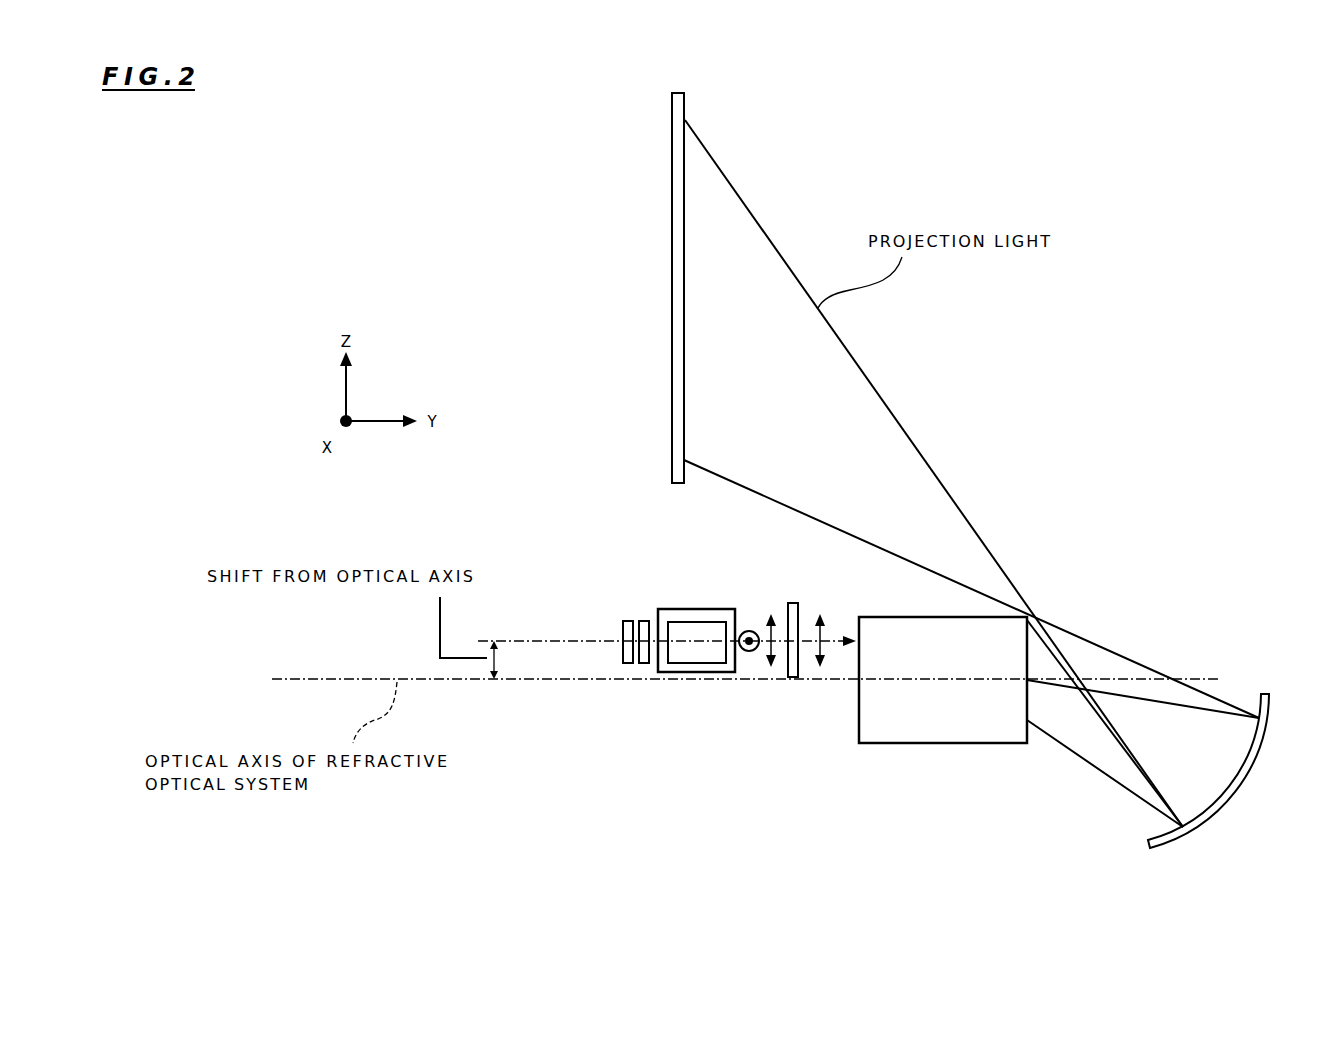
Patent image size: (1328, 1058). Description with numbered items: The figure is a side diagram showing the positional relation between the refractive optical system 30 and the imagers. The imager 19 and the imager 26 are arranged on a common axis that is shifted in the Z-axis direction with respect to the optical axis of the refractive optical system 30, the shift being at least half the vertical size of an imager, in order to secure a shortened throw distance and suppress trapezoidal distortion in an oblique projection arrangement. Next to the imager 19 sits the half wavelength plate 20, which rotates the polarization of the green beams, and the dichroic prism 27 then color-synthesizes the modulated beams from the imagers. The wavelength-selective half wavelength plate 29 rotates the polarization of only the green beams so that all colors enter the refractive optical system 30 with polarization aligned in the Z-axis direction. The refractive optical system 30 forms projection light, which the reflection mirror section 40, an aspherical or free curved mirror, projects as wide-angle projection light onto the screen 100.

The screen 100 is at (672, 300).
The imager 19 is at (628, 619).
The half wavelength plate 20 is at (645, 619).
The dichroic prism 27 is at (712, 608).
The imager 26 is at (688, 655).
The wavelength-selective half wavelength plate 29 is at (795, 603).
The refractive optical system 30 is at (930, 735).
The reflection mirror section 40 is at (1228, 807).